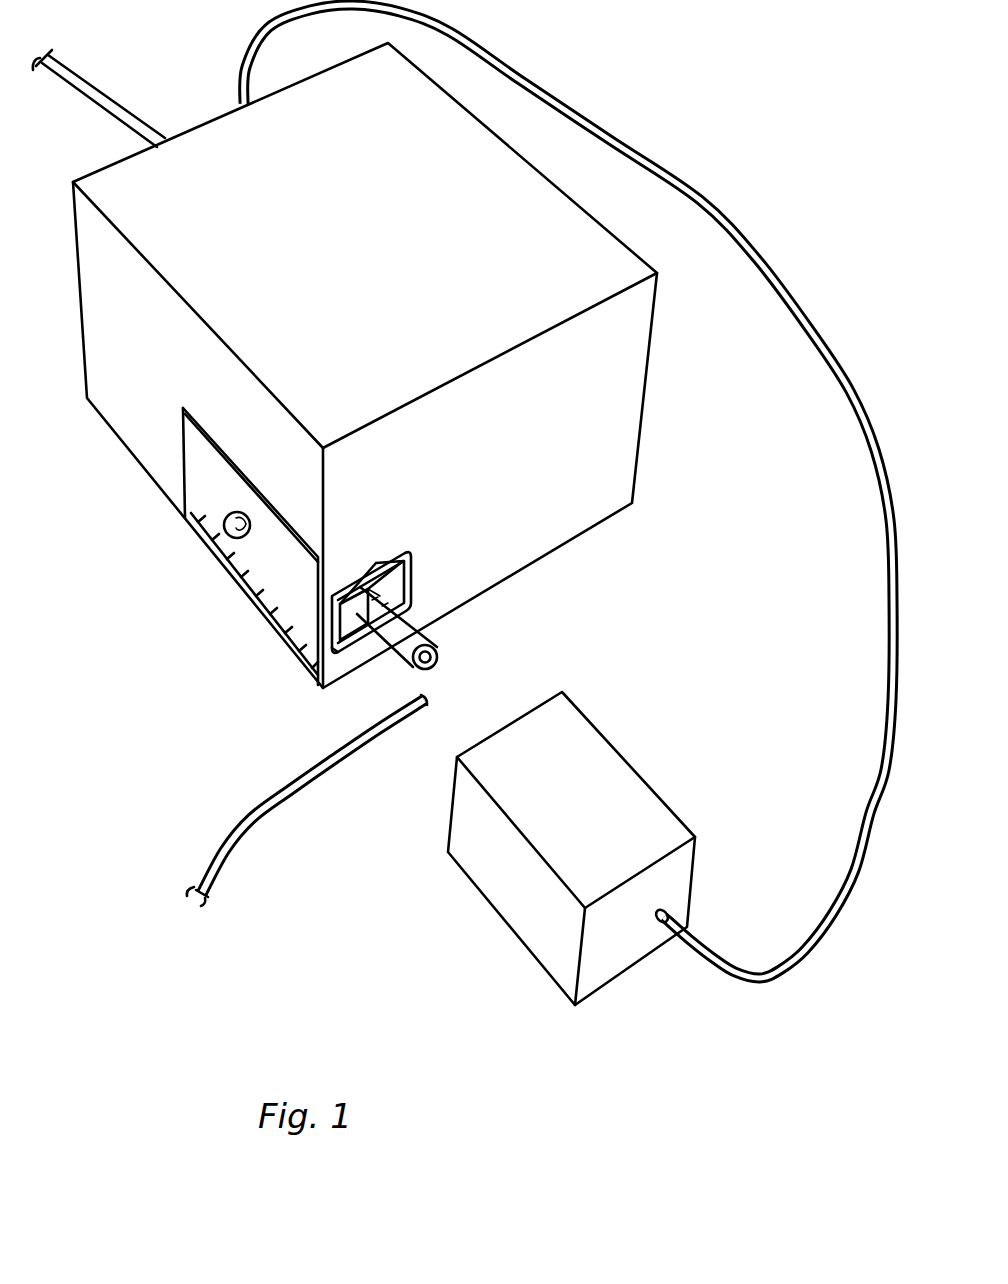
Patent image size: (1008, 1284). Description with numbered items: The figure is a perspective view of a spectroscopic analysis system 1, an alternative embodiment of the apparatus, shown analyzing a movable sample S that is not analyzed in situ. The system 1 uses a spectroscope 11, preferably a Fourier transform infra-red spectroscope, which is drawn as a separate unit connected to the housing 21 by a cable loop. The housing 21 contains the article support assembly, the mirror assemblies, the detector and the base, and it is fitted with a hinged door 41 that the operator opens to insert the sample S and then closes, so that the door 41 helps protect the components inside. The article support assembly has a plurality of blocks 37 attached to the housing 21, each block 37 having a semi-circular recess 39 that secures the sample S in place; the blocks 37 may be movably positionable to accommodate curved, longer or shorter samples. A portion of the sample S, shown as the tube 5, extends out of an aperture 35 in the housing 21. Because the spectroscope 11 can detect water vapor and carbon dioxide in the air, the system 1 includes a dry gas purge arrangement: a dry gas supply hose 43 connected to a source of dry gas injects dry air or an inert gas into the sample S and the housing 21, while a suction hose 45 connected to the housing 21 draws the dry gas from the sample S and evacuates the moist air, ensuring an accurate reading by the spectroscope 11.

The spectroscopic analysis system 1 is at (210, 76).
The air tube 5 is at (442, 646).
The spectroscope 11 is at (627, 792).
The housing 21 is at (157, 448).
The aperture 35 is at (407, 553).
The blocks 37 is at (413, 586).
The semi-circular recess 39 is at (341, 684).
The hinged door 41 is at (205, 505).
The dry gas supply hose 43 is at (250, 812).
The suction hose 45 is at (88, 74).